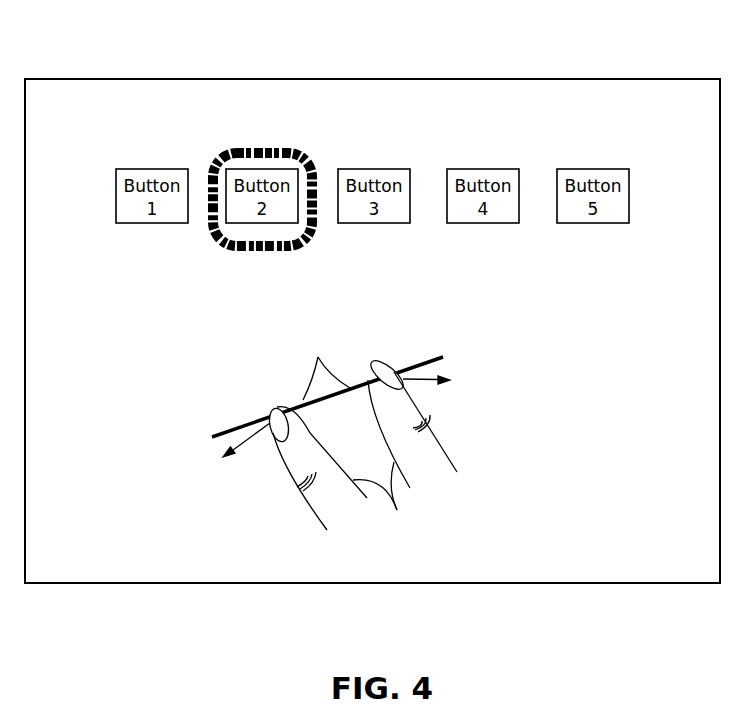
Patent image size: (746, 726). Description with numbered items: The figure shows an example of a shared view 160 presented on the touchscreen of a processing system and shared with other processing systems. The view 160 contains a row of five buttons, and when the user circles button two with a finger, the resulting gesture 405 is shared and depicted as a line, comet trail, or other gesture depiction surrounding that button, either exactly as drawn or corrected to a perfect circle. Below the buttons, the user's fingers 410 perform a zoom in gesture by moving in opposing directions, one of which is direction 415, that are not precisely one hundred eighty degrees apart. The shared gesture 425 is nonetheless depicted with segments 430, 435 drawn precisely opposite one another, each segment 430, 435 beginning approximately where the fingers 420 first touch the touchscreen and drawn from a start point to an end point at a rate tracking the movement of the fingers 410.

The shared view 160 is at (80, 41).
The gesture 405 is at (310, 159).
The fingers 410 is at (324, 424).
The direction 415 is at (246, 442).
The fingers 420 is at (425, 383).
The gesture 425 is at (327, 383).
The segment 430 is at (422, 357).
The segment 435 is at (240, 428).